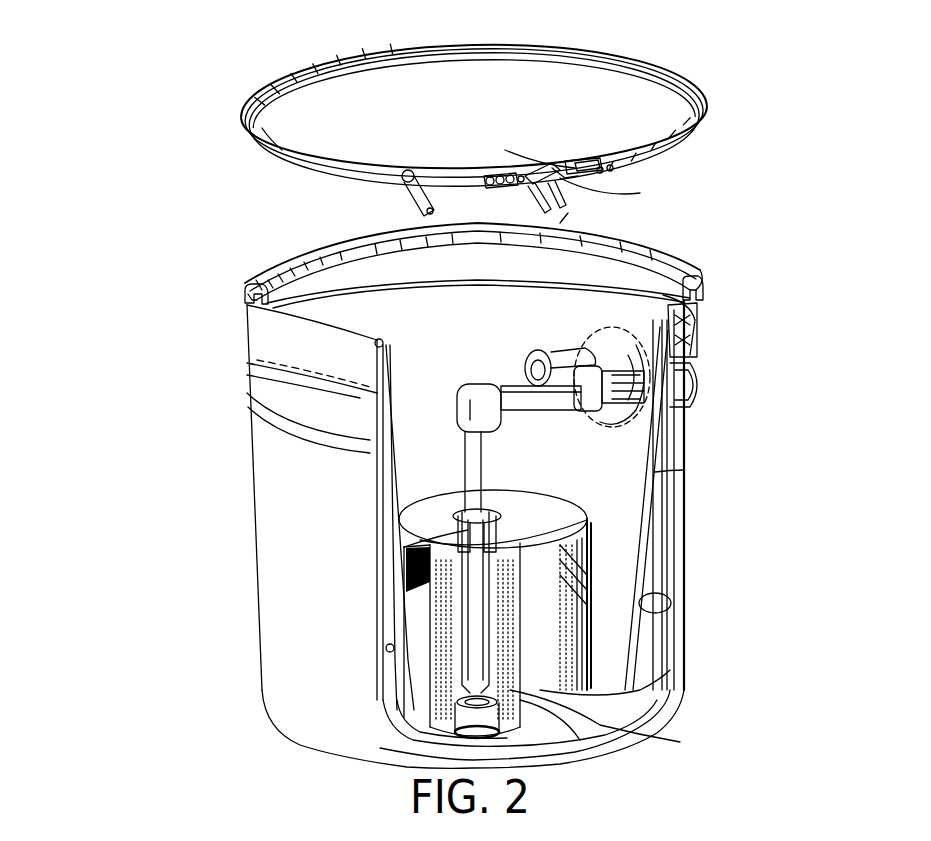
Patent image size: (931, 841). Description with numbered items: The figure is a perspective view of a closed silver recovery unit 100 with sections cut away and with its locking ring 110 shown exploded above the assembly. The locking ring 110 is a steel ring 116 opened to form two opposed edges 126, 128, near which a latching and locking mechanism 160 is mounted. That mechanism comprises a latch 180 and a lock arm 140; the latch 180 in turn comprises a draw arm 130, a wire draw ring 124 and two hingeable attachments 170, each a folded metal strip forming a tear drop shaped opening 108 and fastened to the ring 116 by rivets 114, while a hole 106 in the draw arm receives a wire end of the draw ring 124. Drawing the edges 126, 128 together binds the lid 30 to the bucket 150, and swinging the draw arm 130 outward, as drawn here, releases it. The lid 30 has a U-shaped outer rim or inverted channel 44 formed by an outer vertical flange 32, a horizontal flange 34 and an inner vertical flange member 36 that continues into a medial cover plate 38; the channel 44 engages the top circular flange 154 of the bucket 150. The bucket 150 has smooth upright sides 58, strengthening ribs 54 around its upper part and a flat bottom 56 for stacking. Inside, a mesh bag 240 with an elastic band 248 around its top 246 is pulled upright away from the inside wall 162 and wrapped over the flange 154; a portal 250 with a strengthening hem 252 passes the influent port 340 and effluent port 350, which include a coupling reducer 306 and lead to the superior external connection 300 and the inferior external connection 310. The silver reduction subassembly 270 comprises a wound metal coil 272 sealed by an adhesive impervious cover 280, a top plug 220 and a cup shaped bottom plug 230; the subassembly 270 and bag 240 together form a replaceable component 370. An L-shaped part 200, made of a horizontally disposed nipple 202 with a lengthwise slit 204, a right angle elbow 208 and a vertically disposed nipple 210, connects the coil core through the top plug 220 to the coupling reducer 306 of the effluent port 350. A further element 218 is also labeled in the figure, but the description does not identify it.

The silver recovery unit 100 is at (145, 432).
The locking ring 110 is at (715, 108).
The steel ring 116 is at (272, 135).
The latching and locking mechanism 160 is at (575, 105).
The lock arm 140 is at (398, 199).
The hole 106 is at (508, 174).
The hingeable attachment 170 is at (495, 173).
The rivets 114 is at (470, 173).
The edge 126 is at (530, 168).
The edge 128 is at (520, 193).
The latch 180 is at (552, 152).
The tear drop shaped opening 108 is at (592, 158).
The draw ring 124 is at (580, 220).
The draw arm 130 is at (600, 232).
The lid 30 is at (700, 266).
The vertical flange member 36 is at (300, 250).
The medial cover plate 38 is at (330, 275).
The horizontal flange 34 is at (262, 270).
The outer vertical flange 32 is at (248, 298).
The U-shaped outer rim 44 is at (255, 300).
The strengthening ribs 54 is at (330, 420).
The flat bottom 56 is at (318, 752).
The upright sides 58 is at (375, 428).
The mesh bag 240 is at (300, 373).
The elastic band 248 is at (286, 354).
The top 246 is at (280, 380).
The top circular flange 154 is at (383, 342).
The inside wall 162 is at (385, 647).
The bucket 150 is at (695, 628).
The strengthening hem 252 is at (690, 440).
The impervious cover 280 is at (690, 478).
The external connection 300 is at (705, 316).
The inferior external connection 310 is at (675, 385).
The L-shaped part 200 is at (455, 382).
The horizontally disposed nipple 202 is at (535, 400).
The lengthwise slit 204 is at (522, 380).
The influent port 340 is at (528, 345).
The coupling reducer 306 is at (570, 362).
The portal 250 is at (598, 342).
The right angle elbow 208 is at (460, 415).
The vertically disposed nipple 210 is at (483, 470).
The pipe end 218 is at (480, 713).
The top plug 220 is at (435, 530).
The effluent port 350 is at (580, 500).
The silver reduction subassembly 270 is at (440, 730).
The wound metal coil 272 is at (513, 678).
The cup shaped bottom plug 230 is at (533, 693).
The replaceable component 370 is at (570, 683).